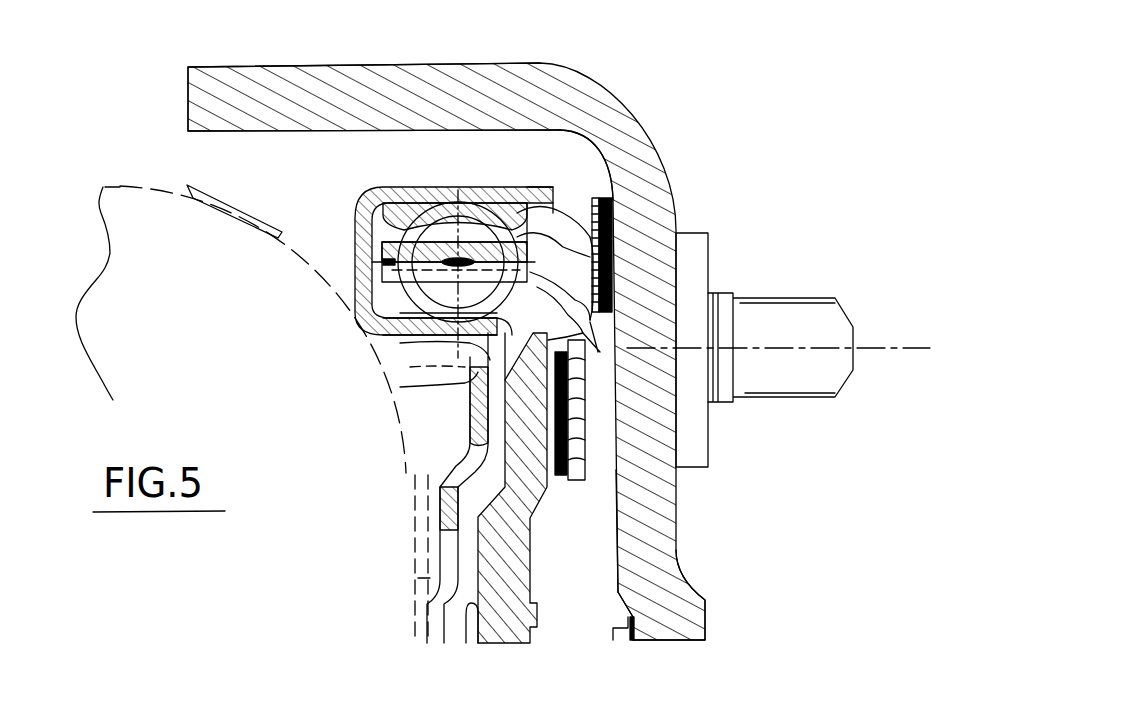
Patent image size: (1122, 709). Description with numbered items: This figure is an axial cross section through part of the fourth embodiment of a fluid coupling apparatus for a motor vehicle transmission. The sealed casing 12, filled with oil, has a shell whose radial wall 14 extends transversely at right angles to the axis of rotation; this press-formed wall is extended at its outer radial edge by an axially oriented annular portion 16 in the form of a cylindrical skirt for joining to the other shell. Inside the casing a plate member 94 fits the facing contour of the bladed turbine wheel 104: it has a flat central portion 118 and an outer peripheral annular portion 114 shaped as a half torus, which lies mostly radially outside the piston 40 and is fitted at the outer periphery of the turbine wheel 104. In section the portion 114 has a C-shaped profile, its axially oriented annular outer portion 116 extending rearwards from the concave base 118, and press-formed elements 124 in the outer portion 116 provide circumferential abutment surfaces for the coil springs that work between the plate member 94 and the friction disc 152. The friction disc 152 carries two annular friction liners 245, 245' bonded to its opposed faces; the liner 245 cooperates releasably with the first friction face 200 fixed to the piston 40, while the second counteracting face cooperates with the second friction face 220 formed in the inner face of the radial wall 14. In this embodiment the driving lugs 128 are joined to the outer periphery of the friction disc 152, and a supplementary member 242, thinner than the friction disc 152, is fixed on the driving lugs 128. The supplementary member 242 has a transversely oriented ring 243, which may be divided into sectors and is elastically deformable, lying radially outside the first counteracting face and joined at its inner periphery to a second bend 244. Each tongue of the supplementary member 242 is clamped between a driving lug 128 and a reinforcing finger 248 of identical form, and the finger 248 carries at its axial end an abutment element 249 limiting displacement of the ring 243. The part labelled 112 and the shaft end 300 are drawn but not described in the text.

The sealed casing 12 is at (593, 101).
The radial wall 14 is at (693, 614).
The axially oriented annular portion 16 is at (203, 85).
The piston 40 is at (497, 627).
The plate member 94 is at (447, 515).
The turbine wheel 104 is at (117, 297).
The sleeve 112 is at (477, 417).
The outer peripheral annular portion 114 is at (330, 301).
The annular outer portion 116 is at (441, 197).
The central portion 118 is at (340, 232).
The press-formed elements 124 is at (397, 197).
The driving lugs 128 is at (365, 320).
The friction disc 152 is at (645, 508).
The first friction face 200 is at (546, 460).
The second friction face 220 is at (614, 210).
The supplementary member 242 is at (385, 263).
The transversely oriented ring 243 is at (603, 270).
The second bend 244 is at (612, 368).
The friction liner 245 is at (677, 424).
The friction liner 245' is at (676, 224).
The reinforcing finger 248 is at (492, 252).
The abutment element 249 is at (640, 127).
The shaft end 300 is at (810, 322).